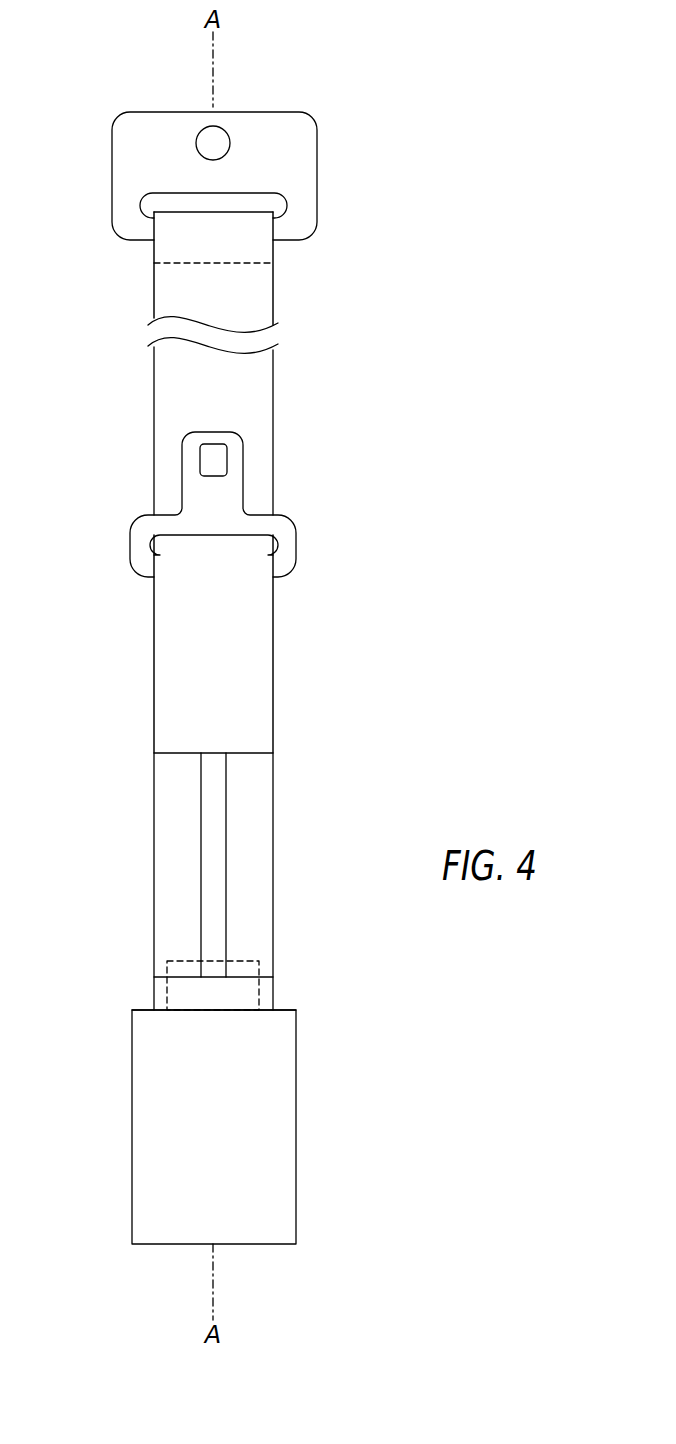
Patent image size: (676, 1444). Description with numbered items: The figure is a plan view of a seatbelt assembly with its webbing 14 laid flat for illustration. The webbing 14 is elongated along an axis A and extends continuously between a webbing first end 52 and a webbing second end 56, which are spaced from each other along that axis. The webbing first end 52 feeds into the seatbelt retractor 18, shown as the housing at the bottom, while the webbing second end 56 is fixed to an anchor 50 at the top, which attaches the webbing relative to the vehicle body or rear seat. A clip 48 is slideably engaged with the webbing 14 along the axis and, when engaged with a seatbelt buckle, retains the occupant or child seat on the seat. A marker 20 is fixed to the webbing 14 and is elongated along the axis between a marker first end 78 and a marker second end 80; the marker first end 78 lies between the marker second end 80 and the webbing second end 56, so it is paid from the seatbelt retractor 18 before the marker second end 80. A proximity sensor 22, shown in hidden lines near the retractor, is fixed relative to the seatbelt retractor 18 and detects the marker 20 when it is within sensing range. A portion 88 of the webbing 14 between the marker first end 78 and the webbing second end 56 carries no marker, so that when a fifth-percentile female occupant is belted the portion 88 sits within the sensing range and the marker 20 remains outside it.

The webbing 14 is at (275, 675).
The seatbelt retractor 18 is at (296, 1180).
The marker 20 is at (212, 843).
The proximity sensor 22 is at (165, 990).
The clip 48 is at (295, 528).
The anchor 50 is at (318, 143).
The webbing first end 52 is at (282, 1008).
The webbing second end 56 is at (253, 250).
The marker first end 78 is at (217, 752).
The marker second end 80 is at (207, 977).
The portion of webbing 88 is at (255, 620).